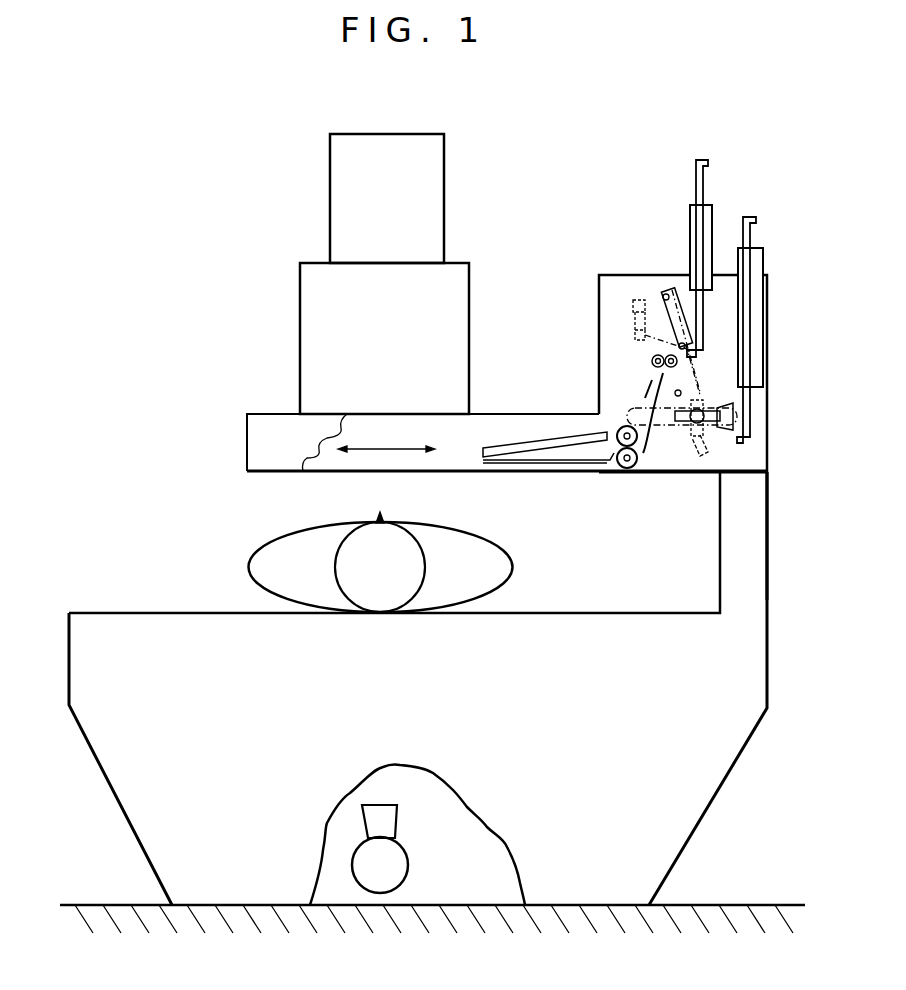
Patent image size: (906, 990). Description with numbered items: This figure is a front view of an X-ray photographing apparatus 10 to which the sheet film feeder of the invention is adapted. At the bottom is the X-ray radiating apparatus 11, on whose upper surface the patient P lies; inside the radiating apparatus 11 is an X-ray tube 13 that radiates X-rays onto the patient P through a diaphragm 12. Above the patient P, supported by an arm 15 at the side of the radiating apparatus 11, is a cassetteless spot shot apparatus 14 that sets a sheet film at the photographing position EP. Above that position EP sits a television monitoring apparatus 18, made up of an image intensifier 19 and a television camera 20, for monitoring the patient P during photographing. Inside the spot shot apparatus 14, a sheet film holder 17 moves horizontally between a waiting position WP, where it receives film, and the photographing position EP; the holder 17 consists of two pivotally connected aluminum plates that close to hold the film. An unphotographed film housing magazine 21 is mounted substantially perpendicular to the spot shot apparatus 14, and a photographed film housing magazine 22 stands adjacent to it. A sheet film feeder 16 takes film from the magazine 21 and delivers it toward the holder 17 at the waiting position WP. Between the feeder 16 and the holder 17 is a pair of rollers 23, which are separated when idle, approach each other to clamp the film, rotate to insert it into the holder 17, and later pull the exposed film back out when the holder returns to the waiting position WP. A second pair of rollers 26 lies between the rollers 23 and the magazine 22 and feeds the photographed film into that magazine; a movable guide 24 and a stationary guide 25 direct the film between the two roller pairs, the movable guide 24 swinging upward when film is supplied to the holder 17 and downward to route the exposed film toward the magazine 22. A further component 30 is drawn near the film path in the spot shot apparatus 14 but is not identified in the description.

The X-ray photographing apparatus 10 is at (185, 517).
The X-ray radiating apparatus 11 is at (128, 828).
The diaphragm 12 is at (398, 812).
The X-ray tube 13 is at (409, 868).
The cassetteless spot shot apparatus 14 is at (770, 382).
The arm 15 is at (768, 505).
The sheet film feeder 16 is at (688, 441).
The sheet film holder 17 is at (510, 460).
The television monitoring apparatus 18 is at (456, 243).
The image intensifier 19 is at (470, 354).
The television camera 20 is at (446, 200).
The unphotographed film housing magazine 21 is at (760, 255).
The photographed film housing magazine 22 is at (706, 205).
The pair of rollers 23 is at (622, 468).
The movable guide 24 is at (652, 443).
The stationary guide 25 is at (648, 388).
The pair of rollers 26 is at (652, 360).
The feed roller 30 is at (735, 407).
The patient P is at (505, 575).
The photographing position EP is at (391, 487).
The waiting position WP is at (557, 487).